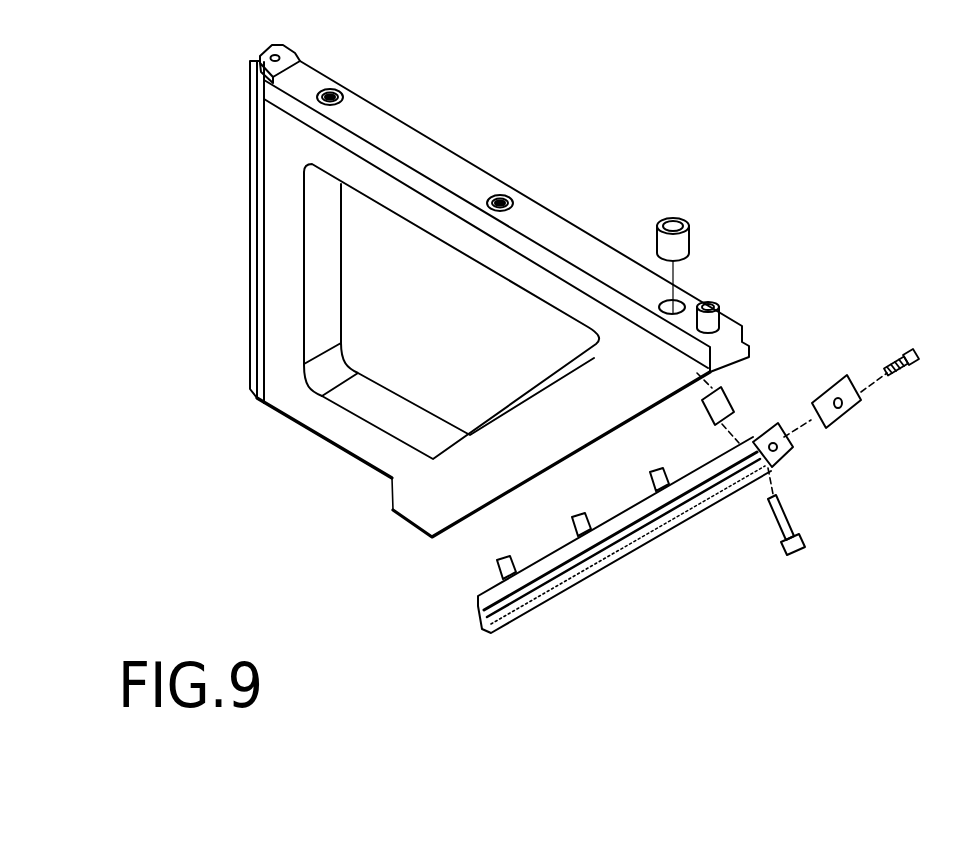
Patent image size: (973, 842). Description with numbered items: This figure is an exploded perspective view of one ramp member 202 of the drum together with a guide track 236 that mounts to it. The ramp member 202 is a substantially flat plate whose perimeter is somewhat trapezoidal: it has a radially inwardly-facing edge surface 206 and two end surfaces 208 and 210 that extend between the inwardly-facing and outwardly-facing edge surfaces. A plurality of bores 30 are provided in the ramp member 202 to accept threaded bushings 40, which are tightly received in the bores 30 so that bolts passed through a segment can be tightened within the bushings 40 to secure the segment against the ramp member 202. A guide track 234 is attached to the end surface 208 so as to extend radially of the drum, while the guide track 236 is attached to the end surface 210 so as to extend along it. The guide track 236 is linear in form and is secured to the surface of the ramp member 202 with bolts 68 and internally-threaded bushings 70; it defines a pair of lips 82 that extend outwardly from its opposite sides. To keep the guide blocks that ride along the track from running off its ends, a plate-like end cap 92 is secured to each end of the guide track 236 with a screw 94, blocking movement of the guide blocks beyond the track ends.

The ramp member 202 is at (562, 242).
The radially inwardly-facing edge surface 206 is at (322, 440).
The end surface 208 is at (250, 208).
The end surface 210 is at (461, 523).
The guide track 234 is at (265, 58).
The guide track 236 is at (577, 582).
The threaded bushing 40 is at (342, 95).
The bore 30 is at (683, 300).
The internally-threaded bushing 70 is at (732, 393).
The lip 82 is at (793, 452).
The end cap 92 is at (856, 402).
The screw 94 is at (910, 348).
The bolt 68 is at (772, 525).